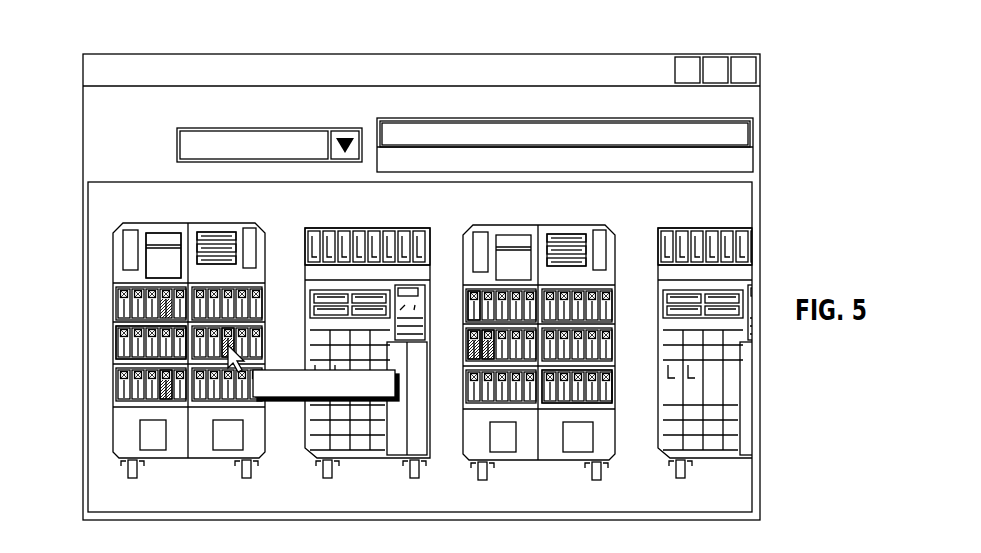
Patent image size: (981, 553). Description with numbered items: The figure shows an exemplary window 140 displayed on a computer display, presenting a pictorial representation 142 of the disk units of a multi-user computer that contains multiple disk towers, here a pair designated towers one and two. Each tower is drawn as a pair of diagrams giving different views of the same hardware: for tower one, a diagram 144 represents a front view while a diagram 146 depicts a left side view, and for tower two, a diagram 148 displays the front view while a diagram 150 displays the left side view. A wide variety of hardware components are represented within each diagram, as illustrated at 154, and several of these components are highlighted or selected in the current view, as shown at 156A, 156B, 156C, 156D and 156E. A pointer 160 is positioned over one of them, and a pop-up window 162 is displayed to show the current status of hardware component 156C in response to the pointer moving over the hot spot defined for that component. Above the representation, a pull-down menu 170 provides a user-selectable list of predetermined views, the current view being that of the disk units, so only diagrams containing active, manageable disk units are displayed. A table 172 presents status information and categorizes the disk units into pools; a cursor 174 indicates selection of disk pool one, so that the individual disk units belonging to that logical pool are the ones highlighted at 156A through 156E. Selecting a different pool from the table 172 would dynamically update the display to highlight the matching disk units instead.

The window 140 is at (116, 52).
The pictorial representation 142 is at (96, 206).
The front view diagram of tower 1 144 is at (96, 470).
The left side view diagram of tower 1 146 is at (386, 470).
The front view diagram of tower 2 148 is at (580, 474).
The left side view diagram of tower 2 150 is at (748, 466).
The hardware components 154 is at (309, 250).
The highlighted hardware component 156A is at (160, 283).
The highlighted hardware component 156B is at (135, 388).
The highlighted hardware component 156C is at (258, 333).
The highlighted hardware component 156D is at (470, 355).
The highlighted hardware component 156E is at (465, 320).
The pointer 160 is at (254, 364).
The pop-up window 162 is at (292, 400).
The pull-down menu 170 is at (246, 126).
The table 172 is at (759, 122).
The cursor 174 is at (742, 147).